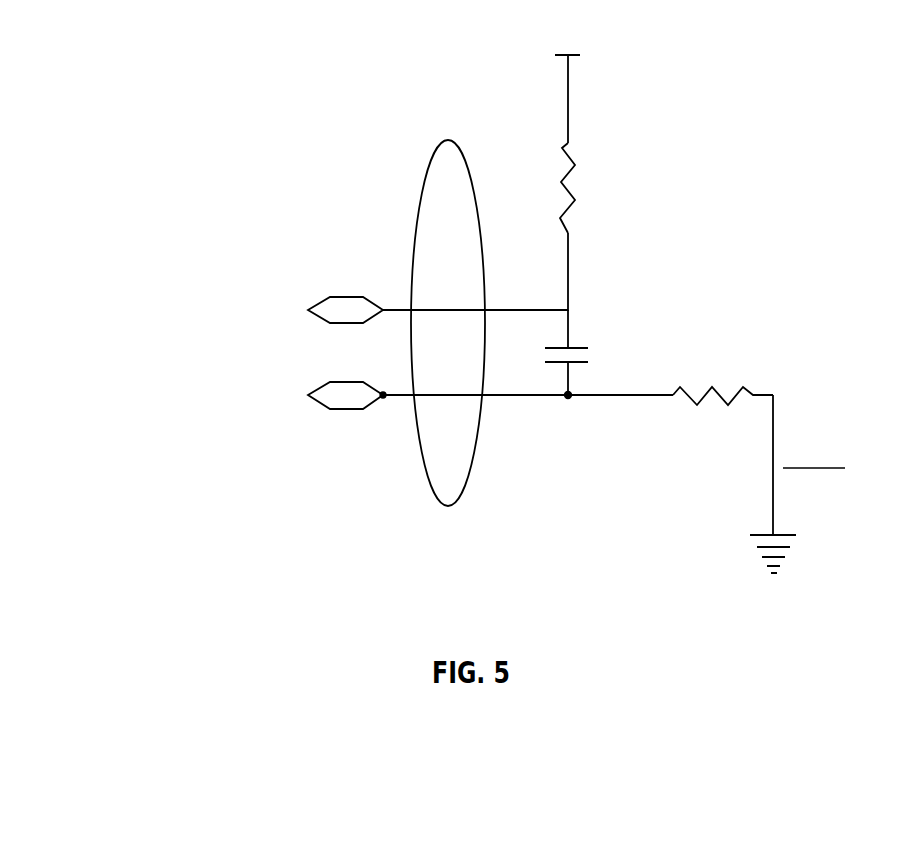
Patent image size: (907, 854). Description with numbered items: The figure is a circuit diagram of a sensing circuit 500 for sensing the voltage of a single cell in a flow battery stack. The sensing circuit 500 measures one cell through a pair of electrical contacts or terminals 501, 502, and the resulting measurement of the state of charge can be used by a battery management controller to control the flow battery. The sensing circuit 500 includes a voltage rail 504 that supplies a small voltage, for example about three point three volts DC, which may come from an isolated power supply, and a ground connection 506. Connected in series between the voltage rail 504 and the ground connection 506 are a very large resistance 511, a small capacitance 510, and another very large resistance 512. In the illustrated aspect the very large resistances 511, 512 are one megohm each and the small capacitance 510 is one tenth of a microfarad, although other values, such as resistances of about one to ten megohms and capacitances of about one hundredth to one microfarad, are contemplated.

The sensing circuit 500 is at (258, 86).
The electrical contact 501 is at (347, 297).
The electrical contact 502 is at (348, 410).
The voltage rail 504 is at (572, 57).
The ground connection 506 is at (762, 533).
The small capacitance 510 is at (580, 347).
The very large resistance 511 is at (573, 202).
The very large resistance 512 is at (695, 402).